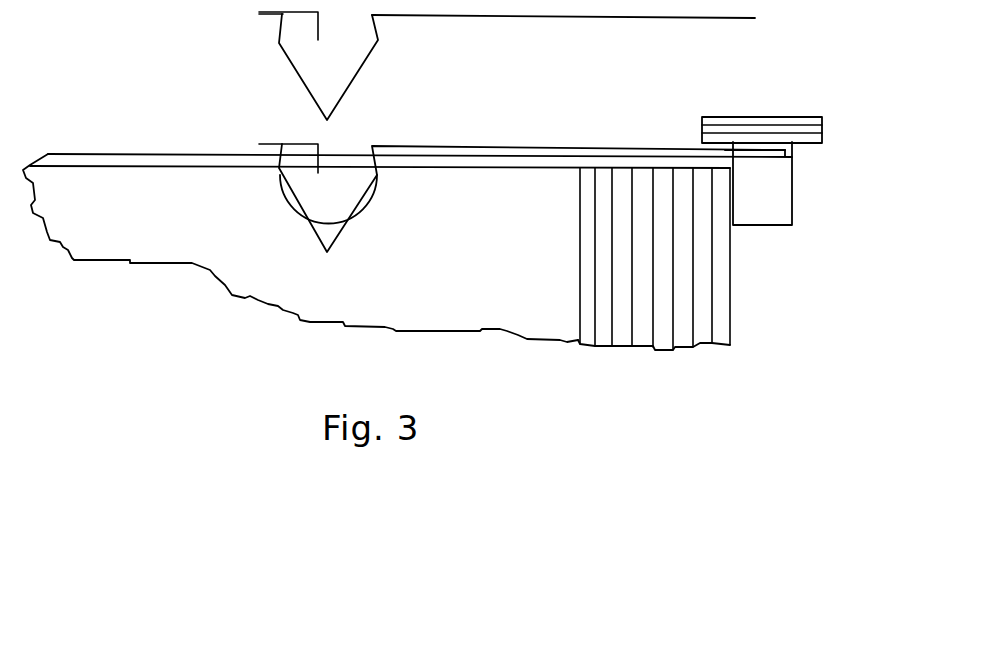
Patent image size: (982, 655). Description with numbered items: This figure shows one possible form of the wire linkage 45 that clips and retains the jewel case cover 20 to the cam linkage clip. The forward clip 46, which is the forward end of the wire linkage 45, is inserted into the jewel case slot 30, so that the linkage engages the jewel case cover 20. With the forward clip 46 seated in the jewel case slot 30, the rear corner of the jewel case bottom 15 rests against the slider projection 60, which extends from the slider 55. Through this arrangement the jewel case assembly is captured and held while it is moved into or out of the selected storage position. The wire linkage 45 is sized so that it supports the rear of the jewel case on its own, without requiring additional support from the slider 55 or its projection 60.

The jewel case bottom 15 is at (733, 315).
The jewel case cover 20 is at (200, 283).
The jewel case slot 30 is at (328, 195).
The wire linkage 45 is at (497, 16).
The forward clip 46 is at (285, 79).
The slider 55 is at (752, 108).
The slider projection 60 is at (777, 233).